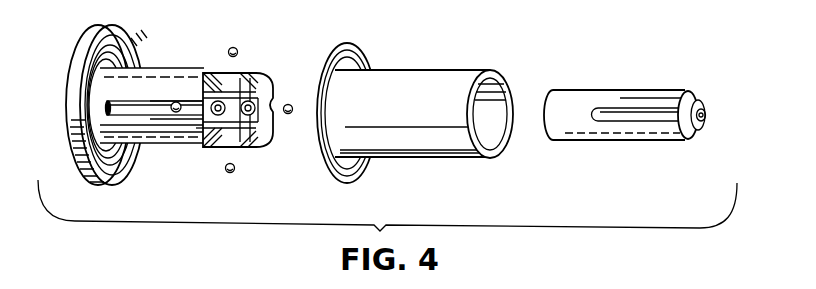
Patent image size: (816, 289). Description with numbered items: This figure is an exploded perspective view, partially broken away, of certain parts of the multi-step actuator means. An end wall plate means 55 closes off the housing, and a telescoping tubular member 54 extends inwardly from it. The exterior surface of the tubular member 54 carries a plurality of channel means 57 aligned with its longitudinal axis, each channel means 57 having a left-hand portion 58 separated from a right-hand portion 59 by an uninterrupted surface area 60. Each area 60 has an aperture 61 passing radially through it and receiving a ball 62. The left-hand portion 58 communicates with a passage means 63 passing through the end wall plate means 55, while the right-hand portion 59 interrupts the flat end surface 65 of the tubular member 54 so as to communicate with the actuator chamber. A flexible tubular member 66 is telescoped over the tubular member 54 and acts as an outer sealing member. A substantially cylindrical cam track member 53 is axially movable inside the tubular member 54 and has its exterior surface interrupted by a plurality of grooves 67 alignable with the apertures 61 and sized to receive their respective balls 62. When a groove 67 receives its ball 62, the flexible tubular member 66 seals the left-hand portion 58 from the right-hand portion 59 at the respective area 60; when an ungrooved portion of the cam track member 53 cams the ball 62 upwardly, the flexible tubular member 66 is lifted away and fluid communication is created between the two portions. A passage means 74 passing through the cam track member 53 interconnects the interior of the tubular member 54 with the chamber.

The cam track member 53 is at (596, 70).
The tubular member 54 is at (167, 85).
The end wall plate means 55 is at (80, 48).
The channel means 57 is at (144, 103).
The left-hand portion 58 is at (191, 105).
The right-hand portion 59 is at (251, 111).
The uninterrupted surface area 60 is at (219, 103).
The aperture 61 is at (198, 130).
The ball 62 is at (238, 50).
The passage means 63 is at (107, 107).
The flat end surface 65 is at (271, 82).
The flexible tubular member 66 is at (437, 73).
The groove 67 is at (632, 113).
The passage means 74 is at (706, 113).